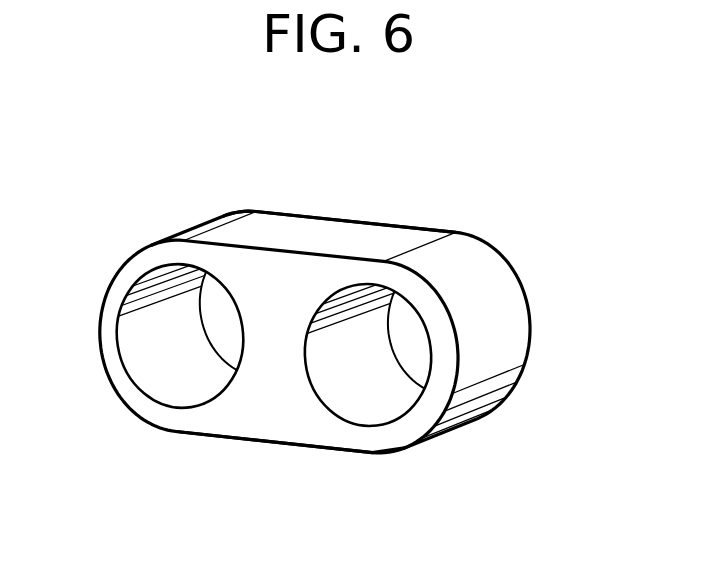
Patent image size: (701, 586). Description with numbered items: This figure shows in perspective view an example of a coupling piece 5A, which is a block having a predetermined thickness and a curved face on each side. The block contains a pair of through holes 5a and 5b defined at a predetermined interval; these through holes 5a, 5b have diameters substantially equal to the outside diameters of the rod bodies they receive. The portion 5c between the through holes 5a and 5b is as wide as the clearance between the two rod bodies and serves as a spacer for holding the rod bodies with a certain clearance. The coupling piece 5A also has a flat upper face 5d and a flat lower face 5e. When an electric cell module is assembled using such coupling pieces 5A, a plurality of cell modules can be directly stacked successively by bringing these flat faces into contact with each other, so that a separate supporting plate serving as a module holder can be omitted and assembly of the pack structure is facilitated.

The coupling piece 5A is at (521, 251).
The through hole 5a is at (412, 345).
The through hole 5b is at (177, 329).
The portion between the through holes 5c is at (265, 358).
The flat upper face 5d is at (330, 215).
The flat lower face 5e is at (297, 446).